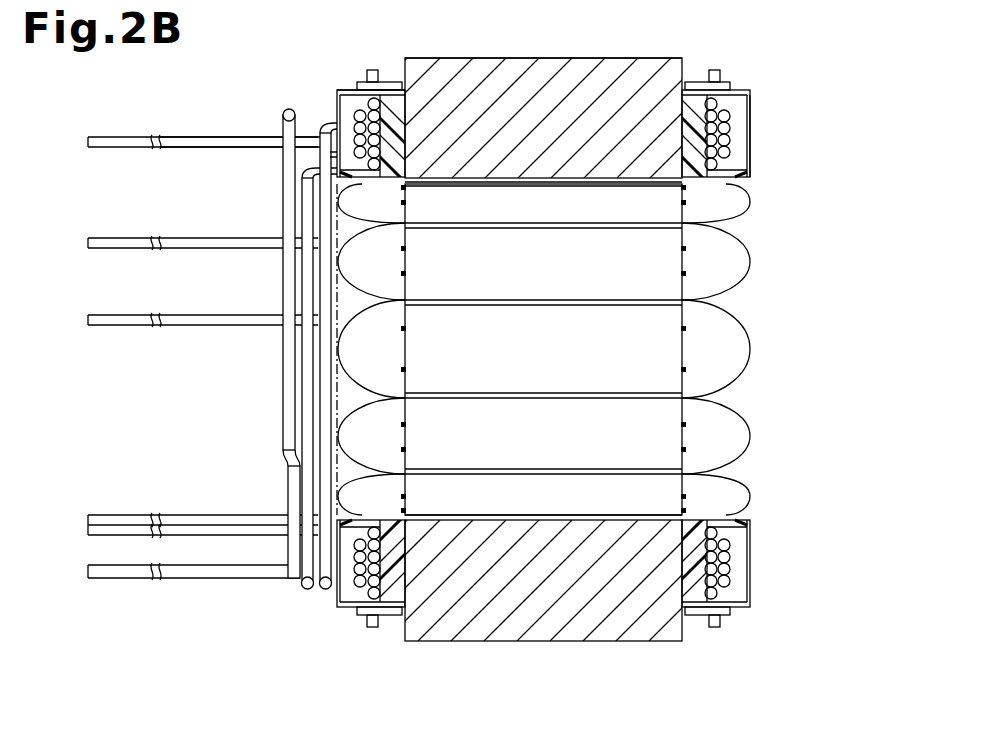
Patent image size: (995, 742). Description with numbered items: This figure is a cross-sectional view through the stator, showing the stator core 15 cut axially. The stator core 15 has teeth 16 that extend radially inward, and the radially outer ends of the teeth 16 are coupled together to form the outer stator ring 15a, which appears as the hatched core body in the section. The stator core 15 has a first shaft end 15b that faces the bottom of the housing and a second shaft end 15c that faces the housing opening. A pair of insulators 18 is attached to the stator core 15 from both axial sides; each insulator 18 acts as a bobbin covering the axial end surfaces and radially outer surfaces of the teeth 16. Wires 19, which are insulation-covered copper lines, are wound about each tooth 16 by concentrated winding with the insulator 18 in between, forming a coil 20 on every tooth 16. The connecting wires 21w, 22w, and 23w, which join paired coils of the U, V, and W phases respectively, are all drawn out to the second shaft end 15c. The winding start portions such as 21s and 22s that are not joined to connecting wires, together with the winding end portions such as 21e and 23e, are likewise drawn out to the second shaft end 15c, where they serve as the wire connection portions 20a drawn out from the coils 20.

The stator core 15 is at (640, 60).
The outer stator ring 15a is at (520, 60).
The first shaft end 15b is at (752, 97).
The second shaft end 15c is at (347, 86).
The teeth 16 is at (545, 172).
The insulators 18 is at (750, 84).
The wires 19 is at (730, 128).
The coil 20 is at (740, 162).
The wire connection portions 20a is at (125, 136).
The winding start portion 21s is at (216, 136).
The connecting wires 21w is at (318, 122).
The winding end portion 21e is at (226, 580).
The winding start portion 22s is at (224, 236).
The connecting wires 22w is at (302, 172).
The connecting wires 23w is at (283, 384).
The winding end portion 23e is at (226, 513).